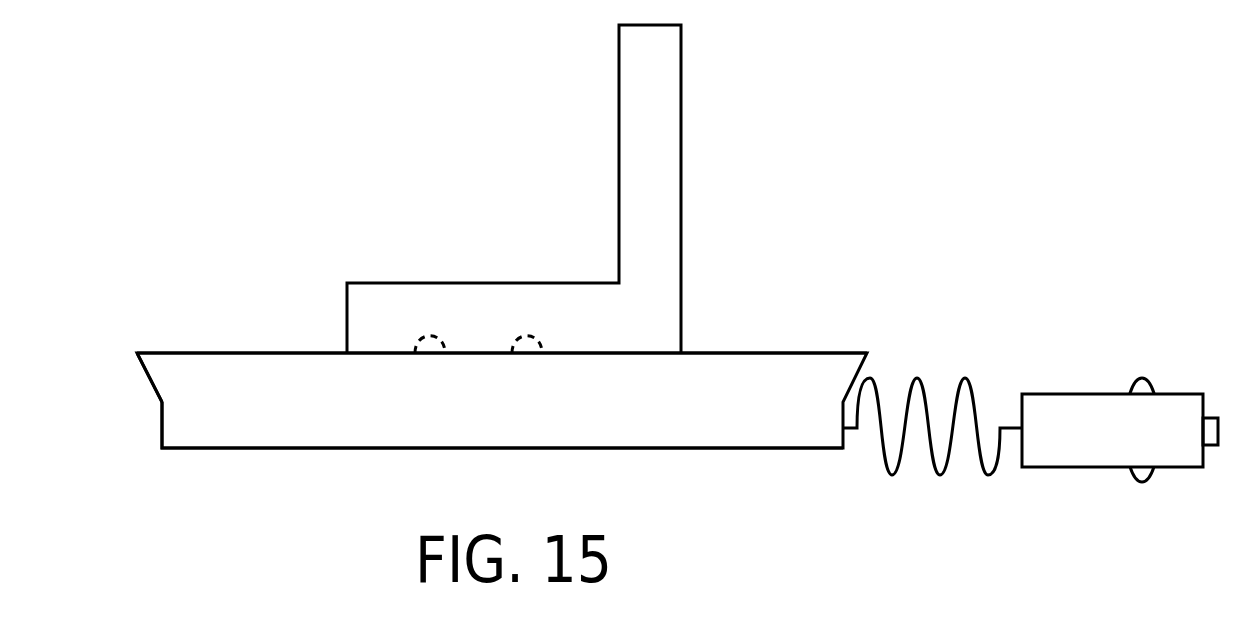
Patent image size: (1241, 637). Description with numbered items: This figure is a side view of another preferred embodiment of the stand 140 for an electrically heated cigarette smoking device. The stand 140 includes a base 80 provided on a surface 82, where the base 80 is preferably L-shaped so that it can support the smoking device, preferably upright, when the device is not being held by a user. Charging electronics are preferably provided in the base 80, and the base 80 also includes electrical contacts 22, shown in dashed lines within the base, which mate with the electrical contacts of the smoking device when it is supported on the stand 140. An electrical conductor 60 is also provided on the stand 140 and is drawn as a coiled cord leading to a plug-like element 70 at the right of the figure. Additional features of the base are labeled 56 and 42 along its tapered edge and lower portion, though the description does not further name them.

The stand 140 is at (822, 248).
The base 80 is at (681, 88).
The surface 82 is at (218, 353).
The tapered side wall 56 is at (140, 362).
The base 42 is at (160, 435).
The electrical contacts 22 is at (428, 353).
The electrical conductor 60 is at (969, 360).
The plug 70 is at (1083, 394).